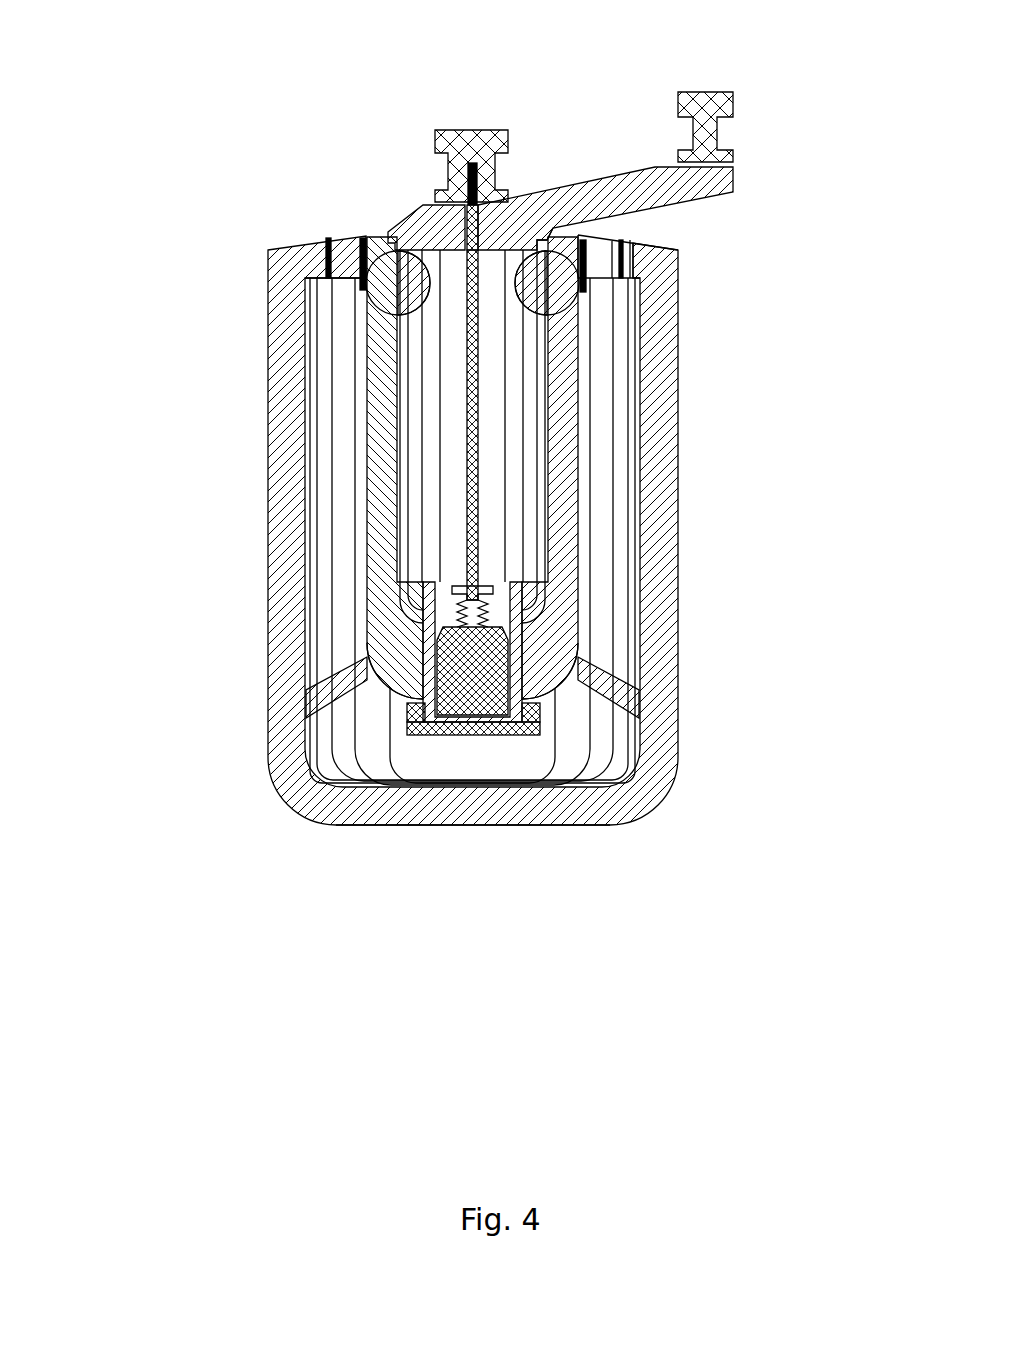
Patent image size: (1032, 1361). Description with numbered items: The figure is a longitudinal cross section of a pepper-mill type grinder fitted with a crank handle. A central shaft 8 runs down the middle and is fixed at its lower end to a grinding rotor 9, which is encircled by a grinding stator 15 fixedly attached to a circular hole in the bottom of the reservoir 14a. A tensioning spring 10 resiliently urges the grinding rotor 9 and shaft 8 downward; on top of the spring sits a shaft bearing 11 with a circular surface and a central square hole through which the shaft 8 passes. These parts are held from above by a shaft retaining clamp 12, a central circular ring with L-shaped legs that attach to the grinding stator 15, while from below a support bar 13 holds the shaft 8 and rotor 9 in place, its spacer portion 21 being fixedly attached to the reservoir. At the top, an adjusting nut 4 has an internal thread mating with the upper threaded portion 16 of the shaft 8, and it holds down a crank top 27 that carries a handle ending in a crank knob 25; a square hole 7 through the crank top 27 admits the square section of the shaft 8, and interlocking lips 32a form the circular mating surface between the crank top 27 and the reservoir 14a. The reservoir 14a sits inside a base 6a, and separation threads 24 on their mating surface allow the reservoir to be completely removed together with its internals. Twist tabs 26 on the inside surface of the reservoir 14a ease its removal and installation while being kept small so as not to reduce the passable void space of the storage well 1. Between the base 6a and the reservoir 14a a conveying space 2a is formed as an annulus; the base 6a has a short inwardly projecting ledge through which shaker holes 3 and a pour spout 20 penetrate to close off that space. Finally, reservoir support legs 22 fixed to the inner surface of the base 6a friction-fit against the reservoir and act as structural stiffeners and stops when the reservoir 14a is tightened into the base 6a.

The storage well 1 is at (515, 363).
The conveying space 2a is at (607, 450).
The shaker holes 3 is at (325, 237).
The adjusting nut 4 is at (453, 143).
The base 6a is at (660, 625).
The square hole 7 is at (340, 265).
The shaft 8 is at (467, 396).
The grinding rotor 9 is at (463, 655).
The tensioning spring 10 is at (495, 720).
The shaft bearing 11 is at (487, 588).
The shaft retaining clamp 12 is at (425, 582).
The support bar 13 is at (538, 733).
The reservoir 14a is at (565, 642).
The grinding stator 15 is at (425, 708).
The upper threaded portion 16 is at (468, 137).
The pour spout 20 is at (610, 260).
The spacer portion 21 is at (418, 712).
The reservoir support legs 22 is at (622, 692).
The separation threads 24 is at (362, 237).
The crank knob 25 is at (702, 110).
The twist tabs 26 is at (537, 263).
The crank top 27 is at (687, 173).
The interlocking lips 32a is at (553, 230).